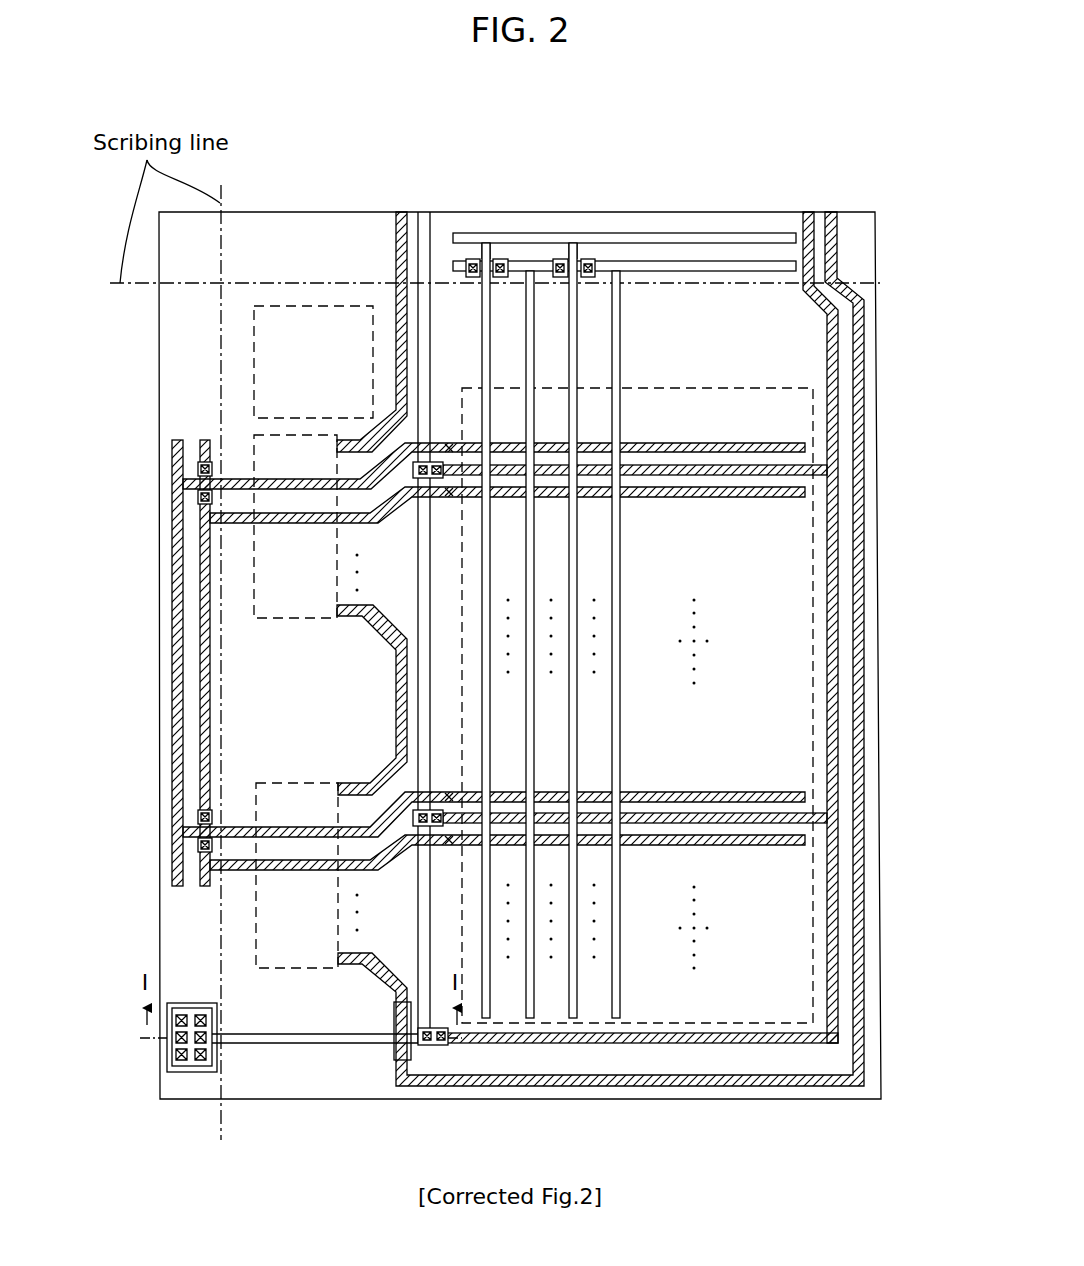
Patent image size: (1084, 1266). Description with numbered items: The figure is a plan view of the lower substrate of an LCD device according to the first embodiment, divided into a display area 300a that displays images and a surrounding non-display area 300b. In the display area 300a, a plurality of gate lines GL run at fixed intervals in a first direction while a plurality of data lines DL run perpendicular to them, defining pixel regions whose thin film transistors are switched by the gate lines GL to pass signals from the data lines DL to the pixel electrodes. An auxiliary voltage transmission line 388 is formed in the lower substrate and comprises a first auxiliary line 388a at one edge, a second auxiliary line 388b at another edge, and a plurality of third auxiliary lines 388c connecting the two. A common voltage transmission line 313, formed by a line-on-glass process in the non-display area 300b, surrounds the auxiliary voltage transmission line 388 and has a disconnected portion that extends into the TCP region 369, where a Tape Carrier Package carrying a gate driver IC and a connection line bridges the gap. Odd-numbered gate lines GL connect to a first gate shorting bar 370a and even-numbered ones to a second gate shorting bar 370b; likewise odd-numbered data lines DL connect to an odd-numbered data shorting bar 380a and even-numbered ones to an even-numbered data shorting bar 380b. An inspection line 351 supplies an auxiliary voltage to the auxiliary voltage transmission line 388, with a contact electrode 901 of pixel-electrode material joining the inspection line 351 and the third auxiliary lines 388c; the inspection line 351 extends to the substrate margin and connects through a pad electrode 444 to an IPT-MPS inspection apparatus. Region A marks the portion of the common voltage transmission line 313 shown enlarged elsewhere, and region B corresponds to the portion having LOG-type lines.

The display area 300a is at (800, 1005).
The non-display area 300b is at (296, 1100).
The common voltage transmission line 313 is at (397, 215).
The inspection line 351 is at (265, 1043).
The TCP region 369 is at (262, 940).
The first gate shorting bar 370a is at (172, 603).
The second gate shorting bar 370b is at (200, 650).
The odd-numbered data shorting bar 380a is at (470, 233).
The even-numbered data shorting bar 380b is at (557, 261).
The auxiliary voltage transmission line 388 is at (628, 627).
The first auxiliary line 388a is at (425, 349).
The second auxiliary line 388b is at (827, 350).
The third auxiliary lines 388c is at (722, 460).
The pad electrode 444 is at (217, 1015).
The contact electrode 901 is at (590, 262).
The gate lines GL is at (745, 452).
The data lines DL is at (618, 570).
The region A is at (395, 1055).
The region B is at (313, 304).